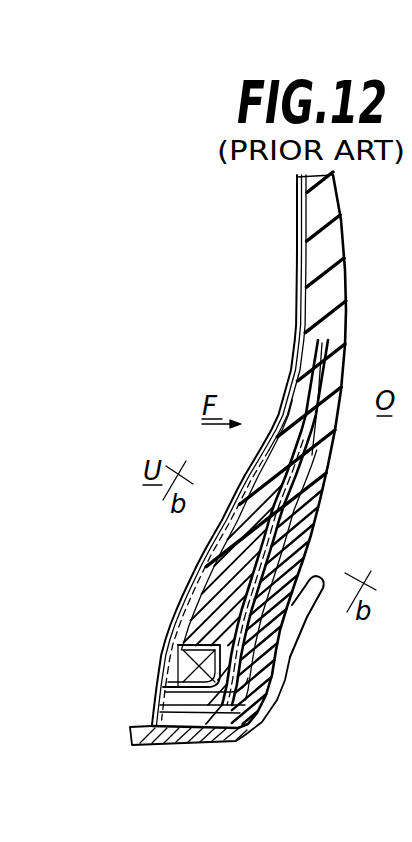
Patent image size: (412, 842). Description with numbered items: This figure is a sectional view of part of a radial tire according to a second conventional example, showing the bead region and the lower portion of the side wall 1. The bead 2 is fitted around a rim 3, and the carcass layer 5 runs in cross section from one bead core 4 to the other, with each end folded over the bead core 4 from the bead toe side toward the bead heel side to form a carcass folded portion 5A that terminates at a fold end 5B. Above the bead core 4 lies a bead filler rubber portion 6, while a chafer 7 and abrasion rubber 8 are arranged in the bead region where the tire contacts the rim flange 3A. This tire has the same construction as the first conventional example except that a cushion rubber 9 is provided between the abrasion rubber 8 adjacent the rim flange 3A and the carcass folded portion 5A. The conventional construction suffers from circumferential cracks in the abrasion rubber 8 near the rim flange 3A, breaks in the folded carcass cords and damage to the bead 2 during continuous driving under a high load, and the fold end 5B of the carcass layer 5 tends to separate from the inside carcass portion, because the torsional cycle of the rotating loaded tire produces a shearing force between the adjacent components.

The side wall 1 is at (328, 248).
The carcass layer 5 is at (312, 303).
The fold end 5B is at (322, 343).
The carcass folded portion 5A is at (298, 463).
The cushion rubber 9 is at (285, 507).
The bead filler rubber portion 6 is at (213, 620).
The rim flange 3A is at (294, 621).
The abrasion rubber 8 is at (266, 646).
The bead core 4 is at (240, 664).
The chafer 7 is at (243, 705).
The bead 2 is at (195, 730).
The rim 3 is at (218, 735).